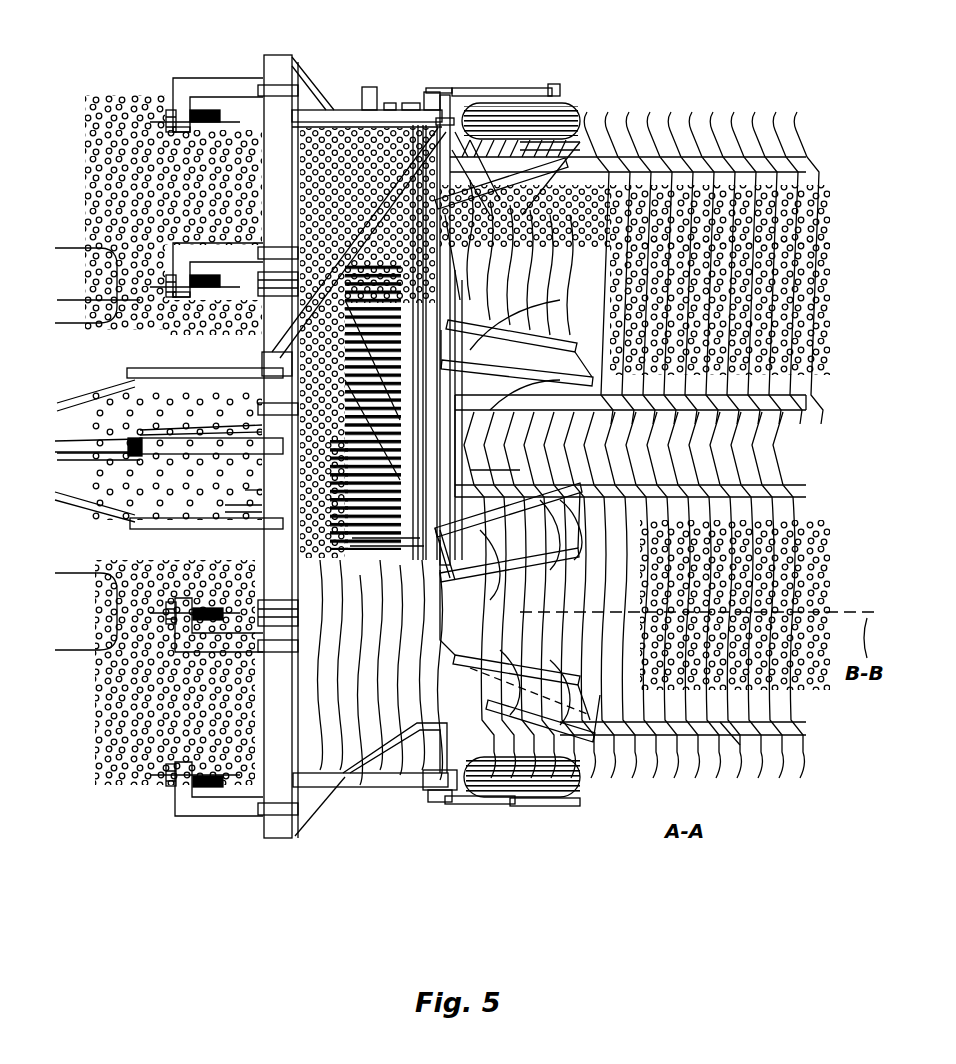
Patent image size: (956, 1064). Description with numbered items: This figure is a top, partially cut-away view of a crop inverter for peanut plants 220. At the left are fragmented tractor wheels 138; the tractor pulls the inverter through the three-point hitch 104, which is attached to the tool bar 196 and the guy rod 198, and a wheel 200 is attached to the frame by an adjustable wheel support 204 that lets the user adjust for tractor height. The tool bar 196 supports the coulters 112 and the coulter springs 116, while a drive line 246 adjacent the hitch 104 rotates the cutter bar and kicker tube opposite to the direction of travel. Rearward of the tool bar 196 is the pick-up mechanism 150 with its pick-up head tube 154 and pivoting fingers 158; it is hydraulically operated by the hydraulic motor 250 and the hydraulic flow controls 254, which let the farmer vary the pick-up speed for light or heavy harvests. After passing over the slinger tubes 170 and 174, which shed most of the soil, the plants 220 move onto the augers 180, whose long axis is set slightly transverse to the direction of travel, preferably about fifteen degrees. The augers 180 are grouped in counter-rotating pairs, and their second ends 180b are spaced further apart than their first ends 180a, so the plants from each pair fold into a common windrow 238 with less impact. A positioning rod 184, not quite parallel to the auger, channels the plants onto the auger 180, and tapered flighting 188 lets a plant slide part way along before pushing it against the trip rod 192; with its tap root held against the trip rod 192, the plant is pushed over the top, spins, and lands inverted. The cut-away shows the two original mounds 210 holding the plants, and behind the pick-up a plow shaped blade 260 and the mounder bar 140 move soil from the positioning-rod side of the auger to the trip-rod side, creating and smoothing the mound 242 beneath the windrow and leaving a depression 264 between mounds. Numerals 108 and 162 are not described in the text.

The three-point hitch 104 is at (136, 302).
The pneumatic cylinder body 108 is at (246, 818).
The coulter 112 is at (160, 778).
The coulter spring 116 is at (206, 792).
The tractor wheels 138 is at (84, 449).
The mounder bar 140 is at (410, 796).
The pick-up mechanism 150 is at (372, 556).
The pick-up head tube 154 is at (406, 536).
The pivoting fingers 158 is at (274, 522).
The shelf support 162 is at (286, 546).
The slinger tube 170 is at (500, 434).
The slinger tube 174 is at (473, 457).
The auger 180 is at (618, 203).
The first end of auger 180a is at (473, 296).
The second end of auger 180b is at (612, 520).
The positioning rod 184 is at (560, 170).
The tapered flighting 188 is at (606, 384).
The trip rod 192 is at (712, 189).
The tool bar 196 is at (284, 838).
The guy rod 198 is at (450, 95).
The wheel 200 is at (576, 792).
The adjustable wheel support 204 is at (510, 805).
The mound 210 is at (379, 666).
The peanut plant 220 is at (133, 122).
The windrow 238 is at (834, 245).
The mound 242 is at (740, 810).
The drive line 246 is at (92, 440).
The hydraulic motor 250 is at (375, 87).
The hydraulic flow controls 254 is at (442, 103).
The plow shaped blade 260 is at (360, 790).
The depression 264 is at (806, 412).